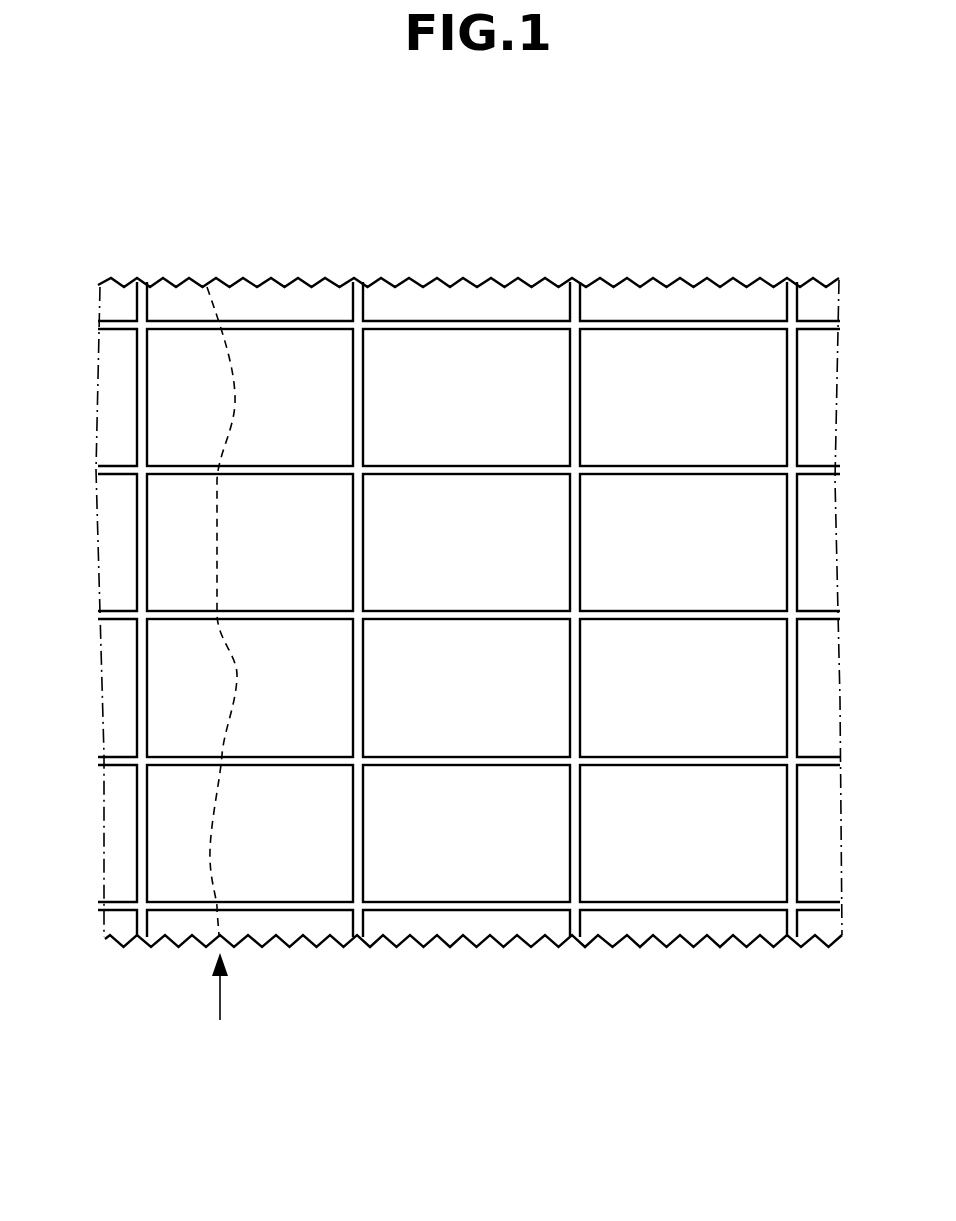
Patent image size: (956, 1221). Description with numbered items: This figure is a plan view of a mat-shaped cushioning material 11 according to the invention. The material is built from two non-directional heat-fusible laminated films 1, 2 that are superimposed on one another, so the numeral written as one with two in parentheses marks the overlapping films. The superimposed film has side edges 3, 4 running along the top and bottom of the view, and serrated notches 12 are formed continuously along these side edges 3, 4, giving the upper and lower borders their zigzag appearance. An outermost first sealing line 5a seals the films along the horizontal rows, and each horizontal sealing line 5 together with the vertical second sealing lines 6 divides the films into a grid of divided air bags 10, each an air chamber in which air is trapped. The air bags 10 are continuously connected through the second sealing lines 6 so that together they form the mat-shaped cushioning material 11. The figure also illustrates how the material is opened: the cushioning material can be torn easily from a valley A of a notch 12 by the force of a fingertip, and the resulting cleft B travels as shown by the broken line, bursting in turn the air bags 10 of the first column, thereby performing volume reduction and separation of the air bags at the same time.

The non-directional heat-fusible laminated film 1 is at (483, 617).
The non-directional heat-fusible laminated film 2 is at (732, 303).
The side edge of superimposed film 3 is at (628, 285).
The side edge of superimposed film 4 is at (672, 938).
The sealing line 5 is at (492, 470).
The outermost first sealing line 5a is at (517, 325).
The second sealing line 6 is at (143, 405).
The divided air bag 10 is at (271, 422).
The mat-shaped cushioning material 11 is at (452, 270).
The serrated notches 12 is at (283, 285).
The valley of the notch A is at (219, 1003).
The cleft B is at (217, 553).